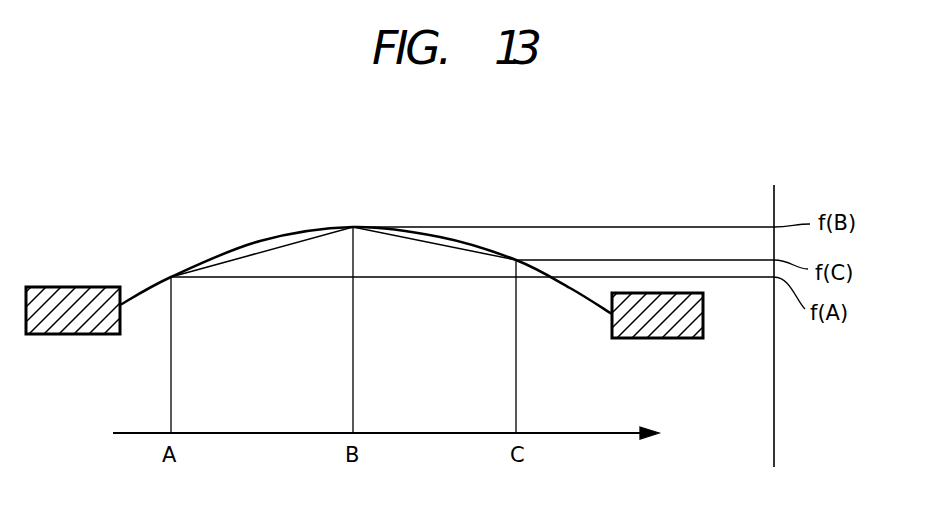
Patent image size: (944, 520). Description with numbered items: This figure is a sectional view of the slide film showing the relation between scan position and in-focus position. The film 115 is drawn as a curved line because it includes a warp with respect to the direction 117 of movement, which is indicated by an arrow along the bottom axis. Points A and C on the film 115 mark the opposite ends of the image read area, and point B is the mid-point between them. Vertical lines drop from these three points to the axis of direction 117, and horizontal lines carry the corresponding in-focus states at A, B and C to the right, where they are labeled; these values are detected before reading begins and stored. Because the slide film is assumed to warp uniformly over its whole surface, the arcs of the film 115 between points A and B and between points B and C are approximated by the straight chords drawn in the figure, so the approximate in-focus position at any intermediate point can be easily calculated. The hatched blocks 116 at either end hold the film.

The film 115 is at (238, 243).
The support blocks 116 is at (92, 296).
The direction of movement 117 is at (592, 436).